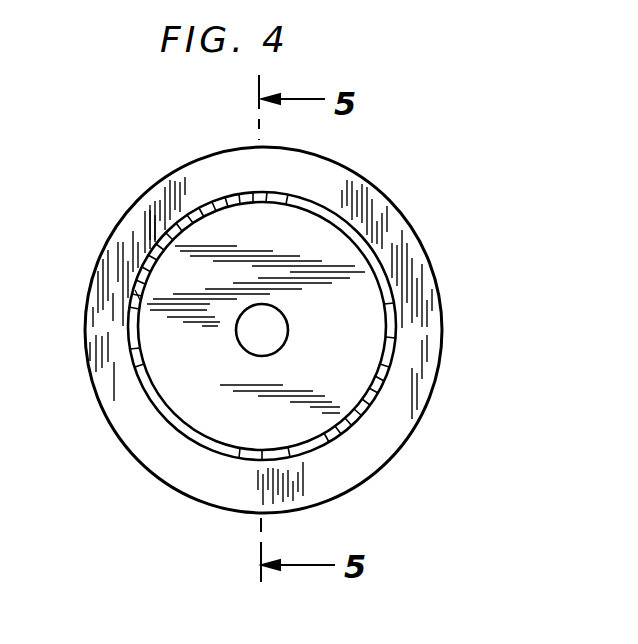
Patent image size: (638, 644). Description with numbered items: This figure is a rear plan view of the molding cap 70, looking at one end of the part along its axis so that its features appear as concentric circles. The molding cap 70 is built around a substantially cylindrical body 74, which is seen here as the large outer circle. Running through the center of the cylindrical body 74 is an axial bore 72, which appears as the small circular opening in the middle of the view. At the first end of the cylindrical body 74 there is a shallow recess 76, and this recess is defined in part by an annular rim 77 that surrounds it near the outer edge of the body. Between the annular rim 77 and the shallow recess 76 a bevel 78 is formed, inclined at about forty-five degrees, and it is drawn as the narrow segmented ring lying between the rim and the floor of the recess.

The molding cap 70 is at (388, 200).
The axial bore 72 is at (243, 350).
The cylindrical body 74 is at (443, 325).
The shallow recess 76 is at (367, 383).
The annular rim 77 is at (162, 192).
The bevel 78 is at (146, 266).